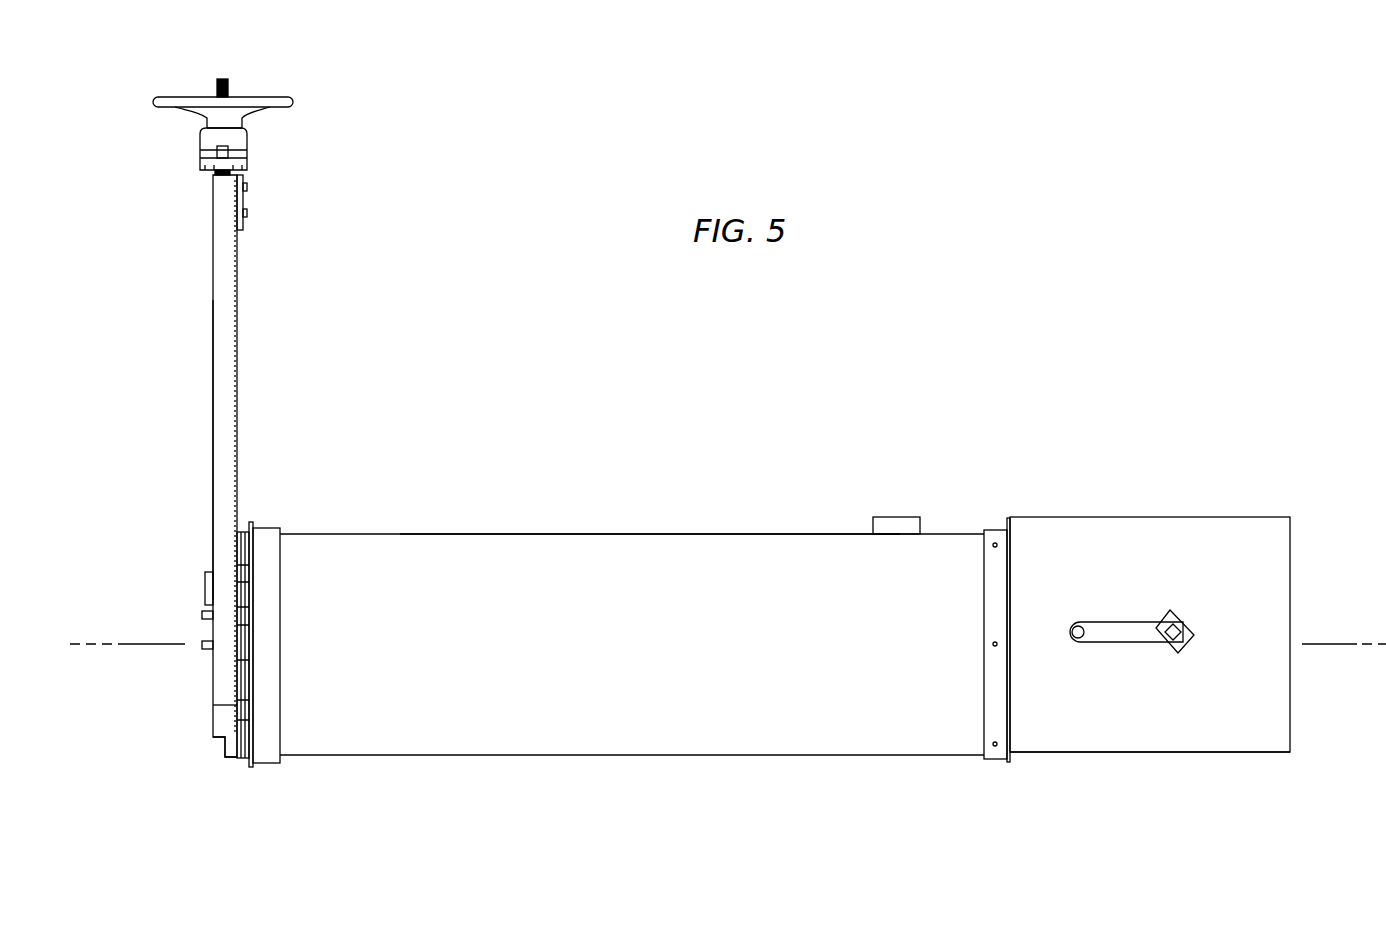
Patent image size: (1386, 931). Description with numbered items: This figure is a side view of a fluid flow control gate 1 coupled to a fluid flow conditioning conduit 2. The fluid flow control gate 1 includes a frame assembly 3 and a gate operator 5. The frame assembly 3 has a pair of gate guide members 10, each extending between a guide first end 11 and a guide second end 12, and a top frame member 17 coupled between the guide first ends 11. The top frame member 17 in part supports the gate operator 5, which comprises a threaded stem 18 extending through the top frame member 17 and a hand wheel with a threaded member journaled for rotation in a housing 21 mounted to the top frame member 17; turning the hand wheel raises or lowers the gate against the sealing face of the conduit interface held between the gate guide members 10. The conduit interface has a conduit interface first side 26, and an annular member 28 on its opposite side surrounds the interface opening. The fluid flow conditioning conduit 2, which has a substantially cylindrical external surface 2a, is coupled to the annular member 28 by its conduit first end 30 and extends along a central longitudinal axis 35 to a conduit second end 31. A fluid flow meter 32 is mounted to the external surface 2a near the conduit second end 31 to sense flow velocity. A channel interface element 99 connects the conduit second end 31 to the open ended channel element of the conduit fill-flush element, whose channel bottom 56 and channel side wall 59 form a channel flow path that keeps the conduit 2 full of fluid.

The fluid flow control gate 1 is at (186, 261).
The fluid flow conditioning conduit 2 is at (804, 774).
The conduit external surface 2a is at (565, 552).
The frame assembly 3 is at (206, 339).
The gate operator 5 is at (278, 140).
The gate guide member 10 is at (222, 382).
The guide first end 11 is at (222, 203).
The guide second end 12 is at (225, 709).
The top frame member 17 is at (246, 200).
The threaded stem 18 is at (231, 86).
The housing 21 is at (249, 152).
The conduit interface first side 26 is at (220, 746).
The annular member 28 is at (267, 535).
The conduit first end 30 is at (297, 553).
The conduit second end 31 is at (953, 530).
The fluid flow meter 32 is at (888, 517).
The central longitudinal axis 35 is at (148, 643).
The channel bottom 56 is at (1073, 757).
The channel side wall 59 is at (1273, 704).
The channel interface element 99 is at (993, 530).